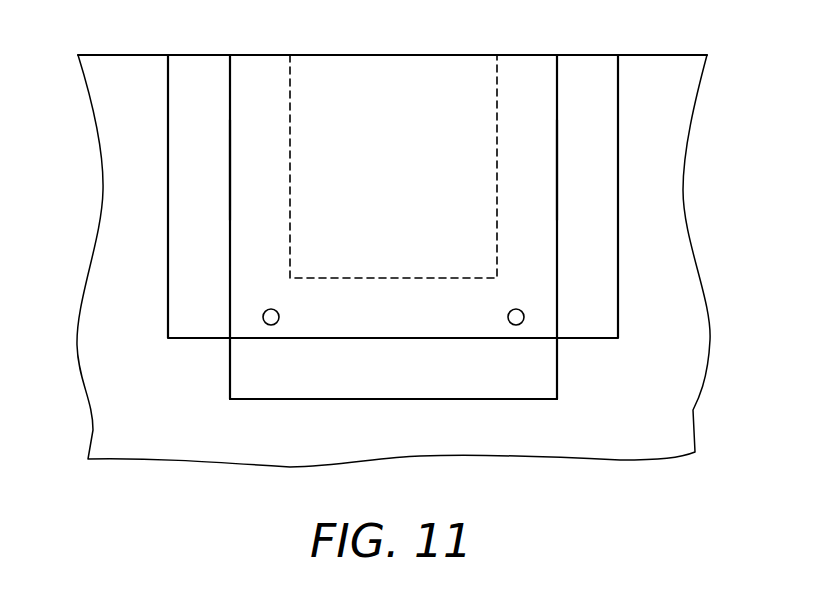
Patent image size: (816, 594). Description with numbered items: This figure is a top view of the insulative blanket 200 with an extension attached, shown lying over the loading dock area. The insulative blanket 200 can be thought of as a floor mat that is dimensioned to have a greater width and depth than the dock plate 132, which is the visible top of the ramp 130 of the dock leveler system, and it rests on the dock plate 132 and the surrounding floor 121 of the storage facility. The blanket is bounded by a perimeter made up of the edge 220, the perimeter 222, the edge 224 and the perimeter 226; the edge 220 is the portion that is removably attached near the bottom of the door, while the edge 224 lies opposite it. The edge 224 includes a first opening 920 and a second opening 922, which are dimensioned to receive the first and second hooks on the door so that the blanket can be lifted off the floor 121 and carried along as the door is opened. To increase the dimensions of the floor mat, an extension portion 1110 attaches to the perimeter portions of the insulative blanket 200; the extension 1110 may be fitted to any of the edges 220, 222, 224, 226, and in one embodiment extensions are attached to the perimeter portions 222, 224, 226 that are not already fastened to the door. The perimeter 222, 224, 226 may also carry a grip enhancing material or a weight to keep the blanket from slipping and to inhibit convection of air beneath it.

The floor 121 is at (166, 428).
The edge 220 is at (452, 55).
The dock plate 132 is at (327, 68).
The ramp 130 is at (390, 68).
The extension portion 1110 is at (182, 251).
The insulative blanket 200 is at (542, 129).
The perimeter 226 is at (230, 171).
The perimeter 222 is at (557, 171).
The edge 224 is at (377, 338).
The first opening 920 is at (271, 325).
The second opening 922 is at (516, 325).